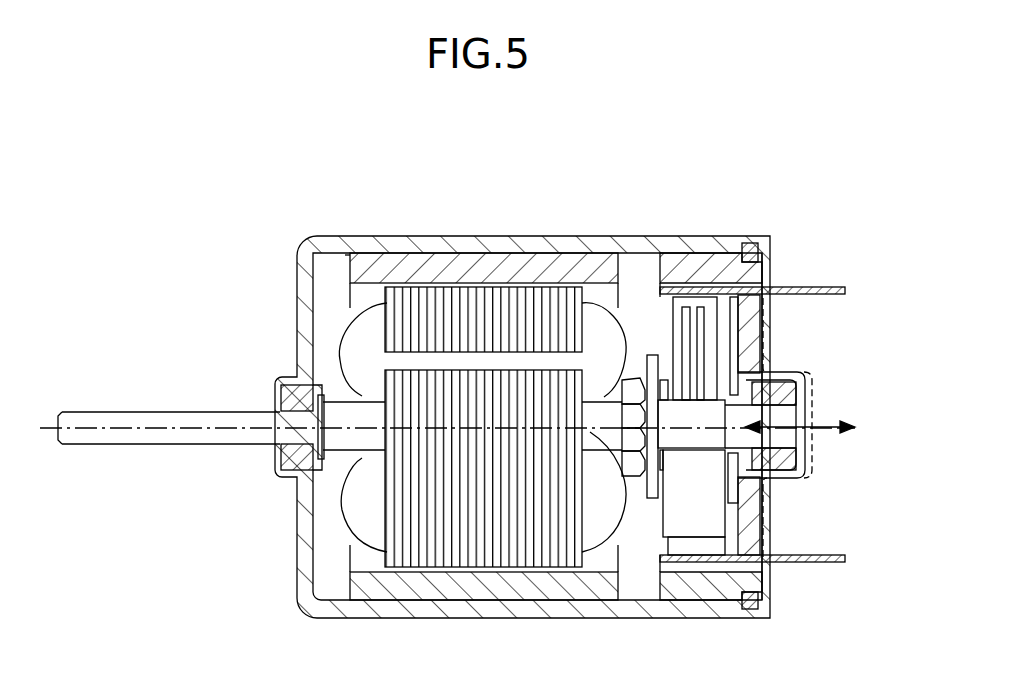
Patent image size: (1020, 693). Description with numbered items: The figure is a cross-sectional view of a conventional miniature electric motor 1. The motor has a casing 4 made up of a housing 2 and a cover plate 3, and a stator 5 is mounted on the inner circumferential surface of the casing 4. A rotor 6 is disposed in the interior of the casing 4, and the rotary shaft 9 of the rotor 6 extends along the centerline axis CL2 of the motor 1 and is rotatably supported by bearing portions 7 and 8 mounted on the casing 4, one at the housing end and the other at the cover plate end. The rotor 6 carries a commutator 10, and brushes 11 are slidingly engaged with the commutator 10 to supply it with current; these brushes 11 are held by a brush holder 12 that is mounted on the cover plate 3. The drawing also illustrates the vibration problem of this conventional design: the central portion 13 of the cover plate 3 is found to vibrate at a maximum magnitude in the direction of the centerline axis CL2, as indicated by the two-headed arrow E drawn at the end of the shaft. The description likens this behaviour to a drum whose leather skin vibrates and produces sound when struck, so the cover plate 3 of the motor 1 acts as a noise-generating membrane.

The miniature electric motor 1 is at (800, 228).
The housing 2 is at (537, 240).
The cover plate 3 is at (764, 332).
The casing 4 is at (432, 228).
The stator 5 is at (346, 254).
The rotor 6 is at (640, 290).
The bearing portion 7 is at (278, 394).
The bearing portion 8 is at (782, 382).
The rotary shaft 9 is at (99, 410).
The commutator 10 is at (700, 450).
The brushes 11 is at (674, 356).
The brush holder 12 is at (692, 258).
The central portion 13 is at (808, 440).
The two-headed arrow E is at (818, 418).
The centerline axis CL2 is at (176, 424).